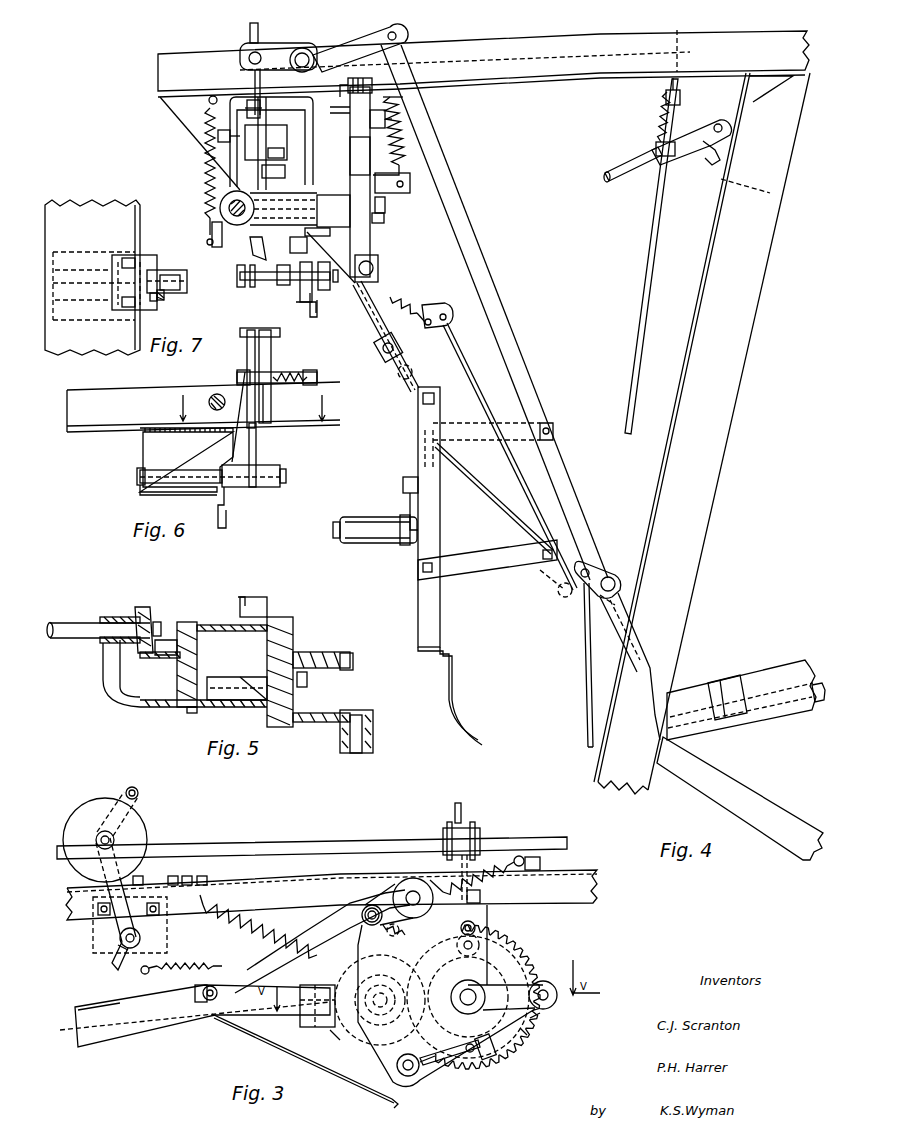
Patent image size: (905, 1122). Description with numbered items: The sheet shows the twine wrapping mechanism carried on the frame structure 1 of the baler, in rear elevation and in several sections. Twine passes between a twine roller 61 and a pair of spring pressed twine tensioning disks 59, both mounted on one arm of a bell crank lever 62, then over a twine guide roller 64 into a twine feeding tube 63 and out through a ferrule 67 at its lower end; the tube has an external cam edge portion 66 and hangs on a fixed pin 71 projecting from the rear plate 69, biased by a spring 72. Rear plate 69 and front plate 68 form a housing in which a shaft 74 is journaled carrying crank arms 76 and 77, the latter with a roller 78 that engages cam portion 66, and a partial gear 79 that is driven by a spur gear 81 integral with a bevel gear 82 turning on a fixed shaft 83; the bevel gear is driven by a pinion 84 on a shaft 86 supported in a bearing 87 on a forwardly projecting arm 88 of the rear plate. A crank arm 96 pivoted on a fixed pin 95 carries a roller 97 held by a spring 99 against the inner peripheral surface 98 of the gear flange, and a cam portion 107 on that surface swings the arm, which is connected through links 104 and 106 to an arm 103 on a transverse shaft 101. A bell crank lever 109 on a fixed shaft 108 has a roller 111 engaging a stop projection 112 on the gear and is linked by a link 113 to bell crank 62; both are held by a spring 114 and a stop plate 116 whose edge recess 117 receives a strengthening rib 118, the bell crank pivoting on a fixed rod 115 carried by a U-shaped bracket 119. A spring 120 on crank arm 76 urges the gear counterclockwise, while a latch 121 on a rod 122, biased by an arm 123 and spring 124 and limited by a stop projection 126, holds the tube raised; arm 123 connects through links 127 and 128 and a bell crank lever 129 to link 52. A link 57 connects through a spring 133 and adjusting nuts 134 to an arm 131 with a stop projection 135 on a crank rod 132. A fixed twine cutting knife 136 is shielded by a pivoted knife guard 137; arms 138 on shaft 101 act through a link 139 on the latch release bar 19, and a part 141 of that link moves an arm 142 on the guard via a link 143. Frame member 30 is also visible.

In FIG. 4, the frame structure 1 is at (492, 45).
In FIG. 7, the frame structure 1 is at (130, 222).
In FIG. 6, the frame structure 1 is at (97, 392).
In FIG. 3, the frame structure 1 is at (578, 898).
In FIG. 4, the latch release bar 19 is at (819, 683).
In FIG. 4, the cross bar 30 is at (700, 682).
In FIG. 4, the link 52 is at (585, 680).
In FIG. 4, the conveyor drive latch plate link 57 is at (640, 300).
In FIG. 6, the twine tensioning disks 59 is at (272, 370).
In FIG. 3, the twine tensioning disks 59 is at (145, 824).
In FIG. 6, the twine roller 61 is at (266, 337).
In FIG. 3, the twine roller 61 is at (138, 796).
In FIG. 7, the bell crank lever 62 is at (165, 297).
In FIG. 6, the bell crank lever 62 is at (258, 470).
In FIG. 3, the bell crank lever 62 is at (120, 933).
In FIG. 4, the twine feeding tube 63 is at (372, 240).
In FIG. 3, the twine feeding tube 63 is at (128, 1030).
In FIG. 4, the twine guide roller 64 is at (348, 86).
In FIG. 3, the twine guide roller 64 is at (416, 878).
In FIG. 3, the external cam edge portion 66 is at (240, 1010).
In FIG. 4, the twine feeding ferrule 67 is at (378, 270).
In FIG. 4, the front plate 68 is at (240, 280).
In FIG. 5, the front plate 68 is at (225, 625).
In FIG. 4, the rear plate 69 is at (313, 146).
In FIG. 5, the rear plate 69 is at (165, 707).
In FIG. 3, the rear plate 69 is at (385, 1048).
In FIG. 4, the fixed pin 71 is at (400, 115).
In FIG. 3, the fixed pin 71 is at (362, 918).
In FIG. 4, the spring 72 is at (403, 130).
In FIG. 3, the spring 72 is at (505, 878).
In FIG. 4, the shaft 74 is at (385, 203).
In FIG. 5, the shaft 74 is at (288, 622).
In FIG. 4, the crank arm 76 is at (212, 235).
In FIG. 5, the crank arm 76 is at (267, 612).
In FIG. 3, the crank arm 76 is at (452, 998).
In FIG. 4, the crank arm 77 is at (337, 195).
In FIG. 5, the crank arm 77 is at (325, 716).
In FIG. 3, the crank arm 77 is at (507, 990).
In FIG. 4, the roller 78 is at (384, 218).
In FIG. 5, the roller 78 is at (373, 732).
In FIG. 3, the roller 78 is at (547, 982).
In FIG. 4, the partial gear 79 is at (283, 130).
In FIG. 5, the partial gear 79 is at (353, 665).
In FIG. 3, the partial gear 79 is at (530, 1037).
In FIG. 4, the spur gear 81 is at (285, 172).
In FIG. 5, the spur gear 81 is at (168, 660).
In FIG. 4, the bevel gear 82 is at (252, 255).
In FIG. 5, the bevel gear 82 is at (158, 655).
In FIG. 3, the bevel gear 82 is at (335, 1032).
In FIG. 5, the fixed shaft 83 is at (187, 622).
In FIG. 5, the pinion 84 is at (146, 607).
In FIG. 3, the pinion 84 is at (330, 1027).
In FIG. 4, the shaft 86 is at (240, 222).
In FIG. 5, the shaft 86 is at (70, 623).
In FIG. 3, the shaft 86 is at (95, 1007).
In FIG. 5, the bearing 87 is at (108, 617).
In FIG. 4, the forwardly projecting arm 88 is at (232, 195).
In FIG. 5, the forwardly projecting arm 88 is at (103, 665).
In FIG. 4, the fixed pin 95 is at (218, 137).
In FIG. 3, the fixed pin 95 is at (383, 930).
In FIG. 3, the crank arm 96 is at (455, 958).
In FIG. 4, the roller 97 is at (285, 153).
In FIG. 3, the roller 97 is at (470, 956).
In FIG. 5, the inner peripheral surface 98 is at (322, 652).
In FIG. 3, the inner peripheral surface 98 is at (520, 952).
In FIG. 4, the spring 99 is at (262, 100).
In FIG. 3, the spring 99 is at (410, 929).
In FIG. 4, the transverse shaft 101 is at (305, 50).
In FIG. 6, the transverse shaft 101 is at (217, 394).
In FIG. 3, the transverse shaft 101 is at (322, 845).
In FIG. 4, the laterally projecting arm 103 is at (279, 48).
In FIG. 3, the laterally projecting arm 103 is at (448, 830).
In FIG. 4, the link 104 is at (250, 28).
In FIG. 3, the link 104 is at (461, 808).
In FIG. 3, the link 106 is at (476, 930).
In FIG. 3, the cam portion 107 is at (537, 1016).
In FIG. 4, the fixed shaft 108 is at (280, 286).
In FIG. 5, the fixed shaft 108 is at (200, 716).
In FIG. 3, the fixed shaft 108 is at (428, 1068).
In FIG. 4, the bell crank lever 109 is at (300, 290).
In FIG. 5, the bell crank lever 109 is at (240, 700).
In FIG. 3, the bell crank lever 109 is at (415, 1077).
In FIG. 4, the roller 111 is at (300, 253).
In FIG. 3, the roller 111 is at (475, 1060).
In FIG. 4, the stop projection 112 is at (318, 234).
In FIG. 5, the stop projection 112 is at (307, 682).
In FIG. 3, the stop projection 112 is at (500, 1058).
In FIG. 4, the link 113 is at (315, 316).
In FIG. 6, the link 113 is at (226, 522).
In FIG. 3, the link 113 is at (268, 1042).
In FIG. 3, the spring 114 is at (198, 966).
In FIG. 7, the fixed rod 115 is at (82, 284).
In FIG. 6, the fixed rod 115 is at (182, 480).
In FIG. 3, the fixed rod 115 is at (125, 945).
In FIG. 7, the stop plate 116 is at (150, 252).
In FIG. 6, the stop plate 116 is at (215, 437).
In FIG. 3, the stop plate 116 is at (155, 880).
In FIG. 7, the edge recess 117 is at (165, 272).
In FIG. 7, the strengthening rib 118 is at (155, 302).
In FIG. 6, the strengthening rib 118 is at (250, 438).
In FIG. 6, the U-shaped bracket 119 is at (142, 492).
In FIG. 3, the U-shaped bracket 119 is at (160, 935).
In FIG. 4, the spring 120 is at (207, 160).
In FIG. 3, the spring 120 is at (262, 938).
In FIG. 4, the latch 121 is at (362, 325).
In FIG. 4, the rod 122 is at (380, 352).
In FIG. 4, the arm 123 is at (442, 306).
In FIG. 4, the spring 124 is at (395, 298).
In FIG. 4, the stop projection 126 is at (402, 380).
In FIG. 4, the link 127 is at (455, 338).
In FIG. 4, the link 128 is at (552, 575).
In FIG. 4, the bell crank lever 129 is at (604, 566).
In FIG. 4, the arm 131 is at (712, 118).
In FIG. 4, the crank rod 132 is at (606, 180).
In FIG. 4, the spring 133 is at (660, 121).
In FIG. 4, the adjusting nuts 134 is at (666, 97).
In FIG. 4, the stop projection 135 is at (712, 160).
In FIG. 4, the twine cutting knife 136 is at (378, 517).
In FIG. 4, the knife guard 137 is at (405, 545).
In FIG. 4, the arms 138 is at (367, 38).
In FIG. 4, the link 139 is at (448, 165).
In FIG. 4, the part 141 is at (507, 423).
In FIG. 4, the arm 142 is at (408, 480).
In FIG. 4, the link 143 is at (418, 449).